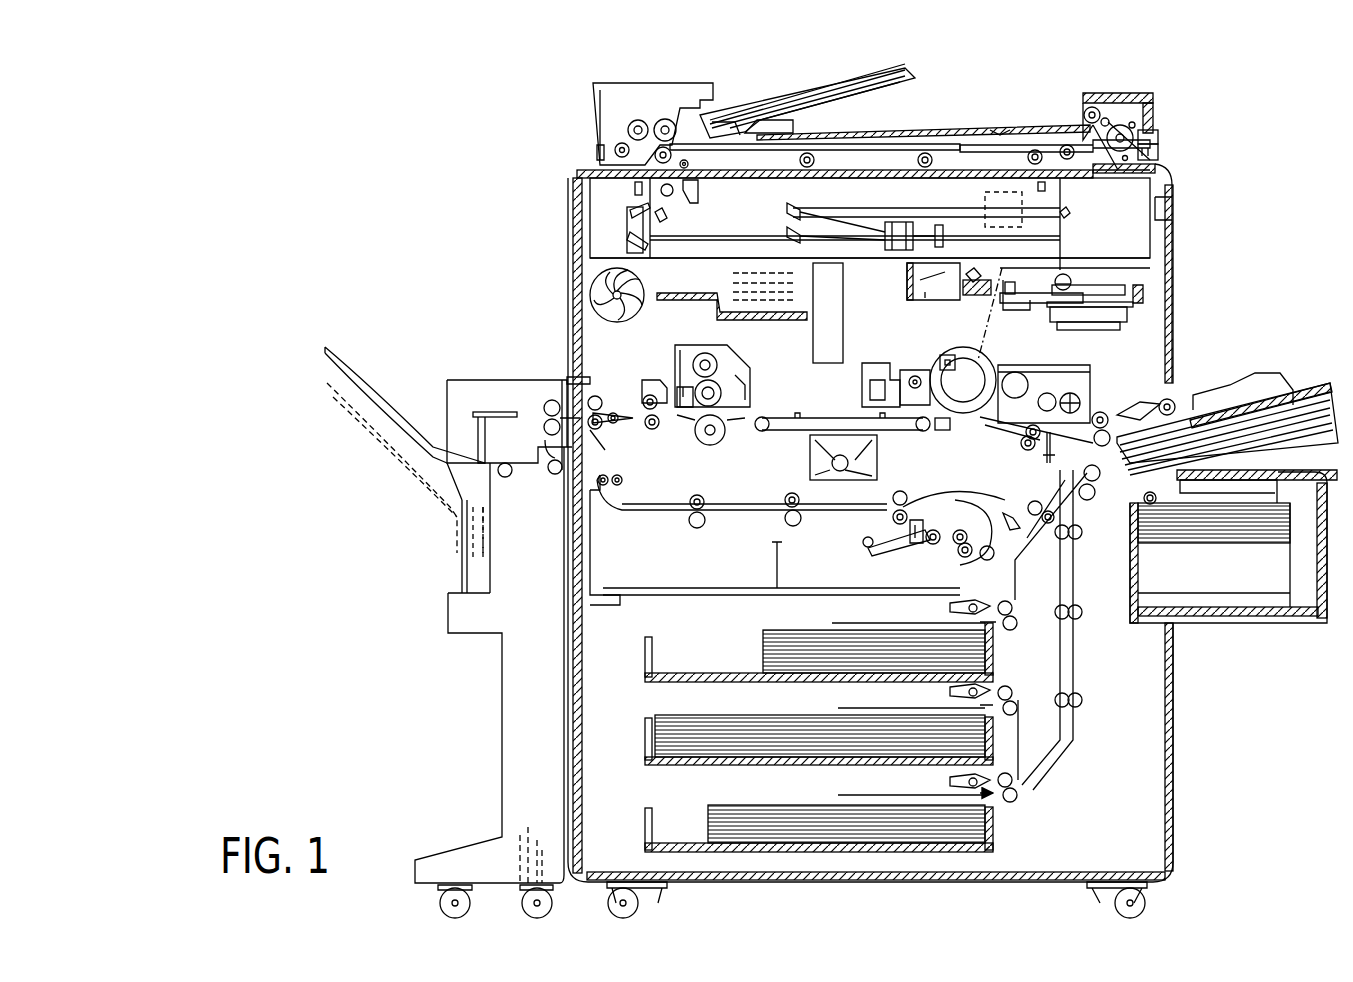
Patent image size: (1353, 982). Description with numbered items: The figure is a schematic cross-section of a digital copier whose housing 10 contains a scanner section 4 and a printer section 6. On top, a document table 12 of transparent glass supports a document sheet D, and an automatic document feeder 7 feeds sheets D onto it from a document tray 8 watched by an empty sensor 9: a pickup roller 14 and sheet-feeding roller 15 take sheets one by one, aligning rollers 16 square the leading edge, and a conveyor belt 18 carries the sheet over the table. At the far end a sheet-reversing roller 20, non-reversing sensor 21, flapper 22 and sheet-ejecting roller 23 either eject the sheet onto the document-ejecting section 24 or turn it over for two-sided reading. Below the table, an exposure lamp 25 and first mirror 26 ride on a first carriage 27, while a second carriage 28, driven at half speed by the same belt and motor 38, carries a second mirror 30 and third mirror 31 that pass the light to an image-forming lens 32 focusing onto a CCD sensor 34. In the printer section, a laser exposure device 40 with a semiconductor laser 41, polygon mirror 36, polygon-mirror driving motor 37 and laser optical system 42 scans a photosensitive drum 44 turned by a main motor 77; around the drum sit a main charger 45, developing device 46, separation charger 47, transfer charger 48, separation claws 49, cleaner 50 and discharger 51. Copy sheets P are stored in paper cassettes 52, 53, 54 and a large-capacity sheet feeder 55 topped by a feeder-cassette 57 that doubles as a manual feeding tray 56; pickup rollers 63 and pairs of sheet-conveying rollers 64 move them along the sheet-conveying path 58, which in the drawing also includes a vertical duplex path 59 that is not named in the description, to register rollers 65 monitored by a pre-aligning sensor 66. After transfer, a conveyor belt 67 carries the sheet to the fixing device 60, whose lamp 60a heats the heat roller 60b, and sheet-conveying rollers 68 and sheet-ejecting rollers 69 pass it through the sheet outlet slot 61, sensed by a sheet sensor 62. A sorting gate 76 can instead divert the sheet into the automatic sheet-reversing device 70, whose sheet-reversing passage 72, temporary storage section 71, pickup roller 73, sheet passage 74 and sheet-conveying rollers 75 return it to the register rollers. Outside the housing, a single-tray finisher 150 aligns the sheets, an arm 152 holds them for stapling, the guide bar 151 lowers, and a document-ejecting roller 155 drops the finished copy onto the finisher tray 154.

The scanner section 4 is at (852, 205).
The printer section 6 is at (1092, 356).
The automatic document feeder 7 is at (748, 80).
The document tray 8 is at (786, 108).
The empty sensor 9 is at (672, 122).
The housing 10 is at (1177, 732).
The document table 12 is at (1003, 183).
The pickup roller 14 is at (642, 118).
The sheet-feeding roller 15 is at (614, 147).
The aligning rollers 16 is at (597, 152).
The conveyor belt 18 is at (877, 140).
The sheet-reversing roller 20 is at (1160, 135).
The non-reversing sensor 21 is at (1158, 152).
The flapper 22 is at (1117, 120).
The sheet-ejecting roller 23 is at (1083, 107).
The document-ejecting section 24 is at (910, 133).
The exposure lamp 25 is at (698, 197).
The first mirror 26 is at (667, 218).
The first carriage 27 is at (630, 188).
The second carriage 28 is at (627, 238).
The second mirror 30 is at (630, 210).
The third mirror 31 is at (650, 255).
The image-forming lens 32 is at (910, 220).
The CCD sensor 34 is at (950, 240).
The polygon mirror 36 is at (1110, 282).
The polygon-mirror driving motor 37 is at (1100, 313).
The motor 38 is at (1043, 118).
The laser exposure device 40 is at (1152, 286).
The semiconductor laser 41 is at (1060, 272).
The laser optical system 42 is at (928, 273).
The photosensitive drum 44 is at (987, 367).
The main charger 45 is at (967, 355).
The developing device 46 is at (1093, 370).
The separation charger 47 is at (930, 435).
The transfer charger 48 is at (933, 500).
The separation claws 49 is at (893, 420).
The cleaner 50 is at (903, 357).
The discharger 51 is at (925, 340).
The paper cassette 52 is at (648, 657).
The paper cassette 53 is at (648, 740).
The paper cassette 54 is at (660, 828).
The large-capacity sheet feeder 55 is at (1250, 593).
The manual feeding tray 56 is at (1252, 403).
The feeder-cassette 57 is at (1323, 383).
The sheet-conveying path 58 is at (790, 411).
The duplex conveying path 59 is at (1060, 570).
The fixing device 60 is at (727, 343).
The lamp 60a is at (705, 390).
The heat roller 60b is at (705, 360).
The sheet outlet slot 61 is at (567, 397).
The sheet sensor 62 is at (577, 397).
The pickup roller 63 is at (1172, 398).
The sheet-conveying rollers 64 is at (1103, 416).
The register rollers 65 is at (1023, 447).
The pre-aligning sensor 66 is at (1045, 457).
The conveyor belt 67 is at (770, 432).
The sheet-conveying rollers 68 is at (653, 430).
The sheet-ejecting rollers 69 is at (603, 397).
The automatic sheet-reversing device 70 is at (636, 523).
The temporary storage section 71 is at (817, 563).
The sheet-reversing passage 72 is at (670, 513).
The pickup roller 73 is at (917, 543).
The sheet passage 74 is at (1043, 502).
The sheet-conveying rollers 75 is at (960, 557).
The sorting gate 76 is at (630, 410).
The main motor 77 is at (813, 478).
The single-tray finisher 150 is at (447, 393).
The guide bar 151 is at (490, 410).
The arm 152 is at (548, 478).
The finisher tray 154 is at (347, 360).
The document-ejecting roller 155 is at (505, 480).
The document sheet D is at (870, 64).
The copy sheet P is at (1283, 397).